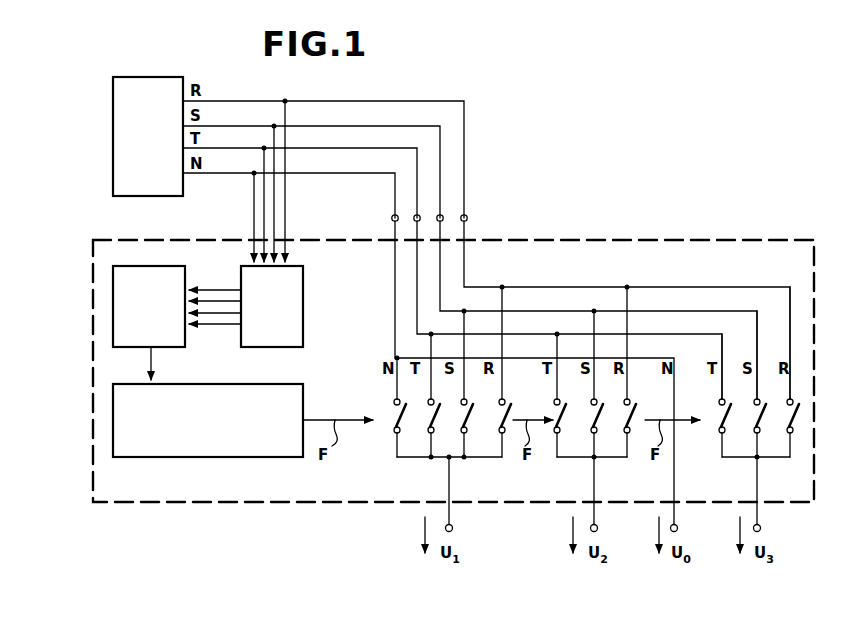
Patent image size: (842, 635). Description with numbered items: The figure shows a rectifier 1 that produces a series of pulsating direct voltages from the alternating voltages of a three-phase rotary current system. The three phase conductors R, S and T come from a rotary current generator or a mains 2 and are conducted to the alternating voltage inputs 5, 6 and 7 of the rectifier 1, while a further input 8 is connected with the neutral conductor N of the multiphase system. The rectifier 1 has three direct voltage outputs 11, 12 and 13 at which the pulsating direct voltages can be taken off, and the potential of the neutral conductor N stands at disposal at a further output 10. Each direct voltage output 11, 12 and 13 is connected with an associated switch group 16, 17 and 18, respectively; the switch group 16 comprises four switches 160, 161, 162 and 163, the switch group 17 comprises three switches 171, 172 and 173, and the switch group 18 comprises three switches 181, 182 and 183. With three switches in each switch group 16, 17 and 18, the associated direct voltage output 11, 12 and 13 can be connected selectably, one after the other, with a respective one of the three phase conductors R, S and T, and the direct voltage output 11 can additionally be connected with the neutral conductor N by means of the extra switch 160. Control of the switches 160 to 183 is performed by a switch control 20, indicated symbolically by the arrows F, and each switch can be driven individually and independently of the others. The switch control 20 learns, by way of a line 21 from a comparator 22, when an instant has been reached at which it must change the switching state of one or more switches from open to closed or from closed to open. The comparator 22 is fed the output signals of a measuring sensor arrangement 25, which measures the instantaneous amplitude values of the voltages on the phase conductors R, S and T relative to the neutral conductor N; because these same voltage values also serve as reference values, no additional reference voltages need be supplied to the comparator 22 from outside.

The rectifier 1 is at (768, 273).
The mains 2 is at (114, 148).
The alternating voltage input 5 is at (468, 220).
The alternating voltage input 6 is at (443, 215).
The alternating voltage input 7 is at (415, 215).
The further input 8 is at (392, 218).
The further output 10 is at (678, 530).
The direct voltage output 11 is at (453, 530).
The direct voltage output 12 is at (598, 530).
The direct voltage output 13 is at (761, 530).
The switch group 16 is at (433, 405).
The switch group 17 is at (578, 405).
The switch group 18 is at (741, 405).
The switch control 20 is at (268, 457).
The line 21 is at (155, 359).
The comparator 22 is at (181, 278).
The measuring sensor arrangement 25 is at (303, 298).
The switch 160 is at (392, 413).
The switch 161 is at (427, 415).
The switch 162 is at (461, 415).
The switch 163 is at (499, 415).
The switch 171 is at (553, 415).
The switch 172 is at (590, 415).
The switch 173 is at (623, 415).
The switch 181 is at (718, 415).
The switch 182 is at (753, 415).
The switch 183 is at (786, 415).